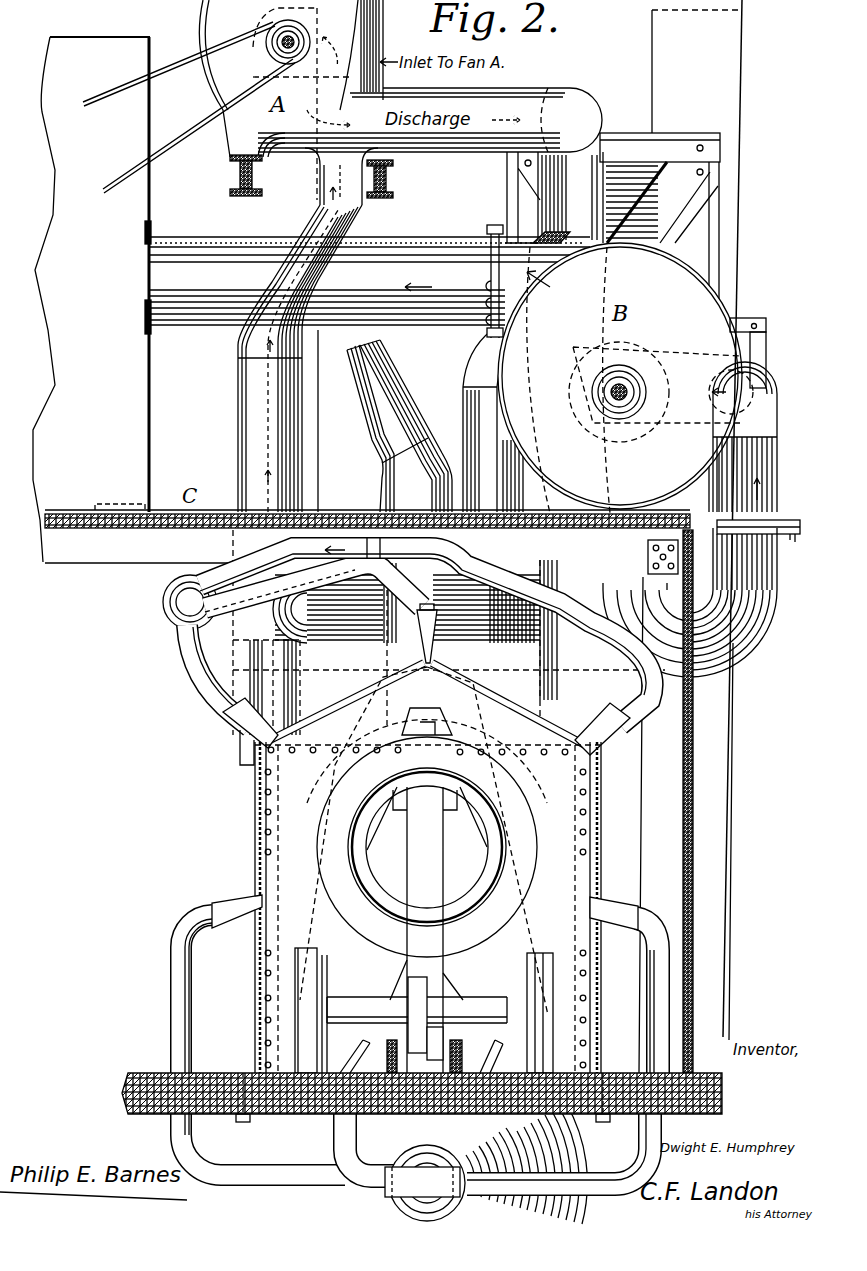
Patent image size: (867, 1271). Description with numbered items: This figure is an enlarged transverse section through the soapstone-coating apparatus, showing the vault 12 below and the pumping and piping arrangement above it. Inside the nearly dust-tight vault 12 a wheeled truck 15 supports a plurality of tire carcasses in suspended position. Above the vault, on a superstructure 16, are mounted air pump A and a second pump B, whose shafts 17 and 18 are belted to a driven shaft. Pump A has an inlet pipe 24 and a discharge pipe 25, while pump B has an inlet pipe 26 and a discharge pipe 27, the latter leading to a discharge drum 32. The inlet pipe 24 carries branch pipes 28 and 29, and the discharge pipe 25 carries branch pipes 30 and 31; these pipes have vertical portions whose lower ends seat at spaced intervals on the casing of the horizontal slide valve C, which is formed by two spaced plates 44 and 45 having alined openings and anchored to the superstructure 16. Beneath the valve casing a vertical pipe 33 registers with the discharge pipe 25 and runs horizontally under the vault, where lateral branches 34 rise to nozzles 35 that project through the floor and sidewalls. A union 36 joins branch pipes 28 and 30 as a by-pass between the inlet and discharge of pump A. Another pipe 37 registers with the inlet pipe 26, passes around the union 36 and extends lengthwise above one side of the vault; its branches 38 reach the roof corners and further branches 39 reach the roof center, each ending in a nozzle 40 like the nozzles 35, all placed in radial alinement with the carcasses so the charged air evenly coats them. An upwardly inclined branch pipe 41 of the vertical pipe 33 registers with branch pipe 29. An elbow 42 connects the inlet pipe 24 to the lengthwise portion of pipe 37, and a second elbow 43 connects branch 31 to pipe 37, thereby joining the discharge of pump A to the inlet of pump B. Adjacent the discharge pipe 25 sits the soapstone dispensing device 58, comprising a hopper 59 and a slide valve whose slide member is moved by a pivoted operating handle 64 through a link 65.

The vault 12 is at (600, 852).
The wheeled truck 15 is at (407, 960).
The superstructure 16 is at (116, 530).
The shaft of pump A 17 is at (281, 48).
The shaft of pump B 18 is at (633, 392).
The inlet pipe of pump A 24 is at (320, 178).
The discharge pipe of pump A 25 is at (550, 208).
The inlet pipe of pump B 26 is at (779, 458).
The discharge pipe of pump B 27 is at (370, 281).
The branch pipe of inlet pipe 28 is at (238, 390).
The branch pipe of inlet pipe 29 is at (402, 405).
The branch pipe of discharge pipe 30 is at (463, 410).
The branch pipe of discharge pipe 31 is at (662, 440).
The discharge drum 32 is at (92, 299).
The vertical pipe 33 is at (557, 625).
The lateral branches 34 is at (287, 1170).
The nozzles 35 is at (229, 898).
The union 36 is at (238, 755).
The pipe 37 is at (755, 622).
The branches 38 is at (203, 688).
The branches 39 is at (352, 672).
The nozzles 40 is at (223, 727).
The inclined branch pipe 41 is at (415, 622).
The elbow 42 is at (283, 607).
The elbow 43 is at (612, 588).
The plate 44 is at (795, 520).
The plate 45 is at (790, 534).
The soapstone dispensing device 58 is at (705, 133).
The hopper 59 is at (640, 160).
The pivoted operating handle 64 is at (767, 348).
The link 65 is at (758, 318).